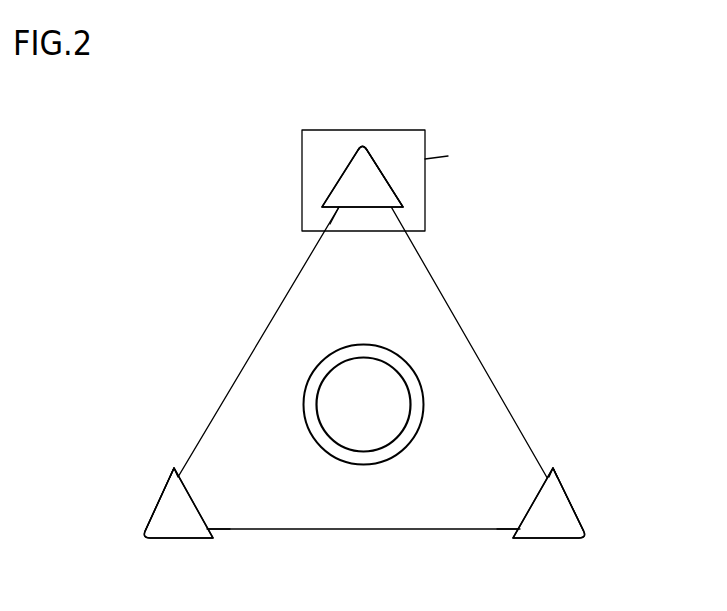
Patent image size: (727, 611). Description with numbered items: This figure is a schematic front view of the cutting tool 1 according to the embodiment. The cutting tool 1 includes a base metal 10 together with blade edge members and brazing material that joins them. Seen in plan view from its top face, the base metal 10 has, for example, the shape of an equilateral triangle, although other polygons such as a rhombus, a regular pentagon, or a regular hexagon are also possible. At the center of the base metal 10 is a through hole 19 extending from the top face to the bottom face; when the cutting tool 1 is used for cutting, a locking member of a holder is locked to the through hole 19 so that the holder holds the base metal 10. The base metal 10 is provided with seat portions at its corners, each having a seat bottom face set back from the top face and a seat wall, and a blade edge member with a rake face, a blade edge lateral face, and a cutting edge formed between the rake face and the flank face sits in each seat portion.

The cutting tool 1 is at (546, 177).
The base metal 10 is at (402, 530).
The through hole 19 is at (340, 452).